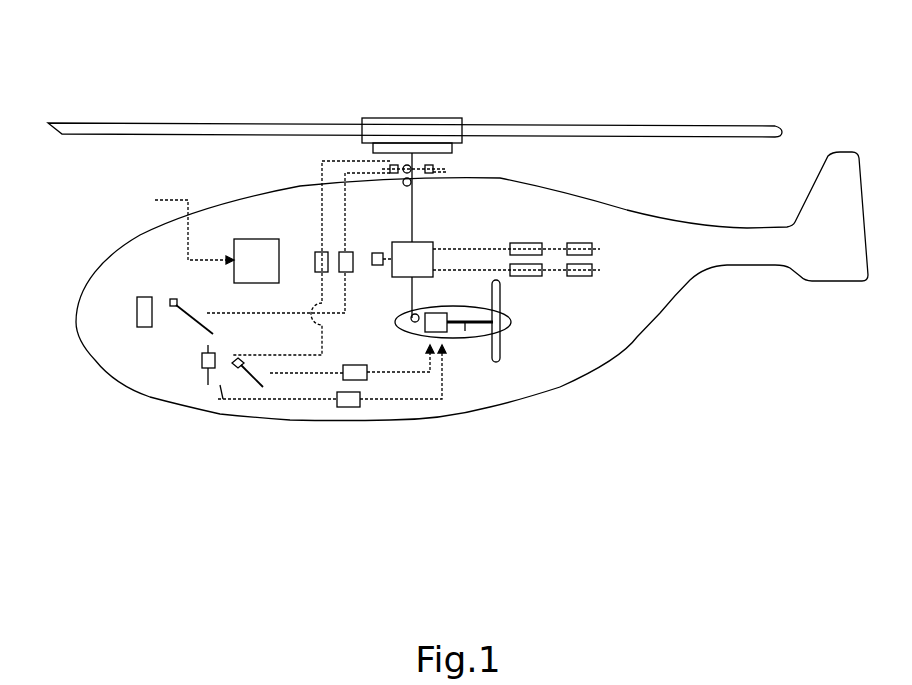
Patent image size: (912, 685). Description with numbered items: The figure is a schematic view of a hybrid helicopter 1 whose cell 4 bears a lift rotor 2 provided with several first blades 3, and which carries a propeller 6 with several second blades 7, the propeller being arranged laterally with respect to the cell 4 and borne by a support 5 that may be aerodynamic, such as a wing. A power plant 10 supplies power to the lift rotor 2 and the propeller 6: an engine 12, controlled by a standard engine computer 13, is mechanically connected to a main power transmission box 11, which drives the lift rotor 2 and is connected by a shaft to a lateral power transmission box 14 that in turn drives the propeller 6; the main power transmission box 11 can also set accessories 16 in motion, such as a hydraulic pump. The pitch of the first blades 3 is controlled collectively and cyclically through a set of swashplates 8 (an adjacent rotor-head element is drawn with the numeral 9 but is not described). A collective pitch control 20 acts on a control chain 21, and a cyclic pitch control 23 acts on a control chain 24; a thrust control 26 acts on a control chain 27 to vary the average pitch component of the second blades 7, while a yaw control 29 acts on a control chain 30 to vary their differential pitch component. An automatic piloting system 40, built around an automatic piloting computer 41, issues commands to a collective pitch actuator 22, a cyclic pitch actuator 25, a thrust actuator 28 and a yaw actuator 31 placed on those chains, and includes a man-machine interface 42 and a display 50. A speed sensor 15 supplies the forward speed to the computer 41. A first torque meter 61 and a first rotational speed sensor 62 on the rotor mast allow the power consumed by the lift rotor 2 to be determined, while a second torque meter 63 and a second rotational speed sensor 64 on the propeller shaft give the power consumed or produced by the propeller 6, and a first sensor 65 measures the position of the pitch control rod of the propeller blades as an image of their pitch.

The hybrid helicopter 1 is at (124, 491).
The lift rotor 2 is at (415, 85).
The first blades 3 is at (664, 125).
The cell 4 is at (550, 393).
The support 5 is at (385, 306).
The propeller 6 is at (535, 325).
The second blades 7 is at (500, 342).
The set of swashplates 8 is at (447, 160).
The rotor sensor 9 is at (433, 172).
The power plant 10 is at (546, 303).
The main power transmission box 11 is at (433, 243).
The engine 12 is at (545, 243).
The engine computer 13 is at (592, 249).
The lateral power transmission box 14 is at (463, 331).
The speed sensor 15 is at (137, 212).
The accessories 16 is at (377, 250).
The collective pitch control 20 is at (192, 325).
The control chain 21 is at (253, 313).
The collective pitch actuator 22 is at (337, 248).
The cyclic pitch control 23 is at (183, 385).
The control chain 24 is at (320, 345).
The cyclic pitch actuator 25 is at (317, 250).
The thrust control 26 is at (245, 374).
The control chain 27 is at (312, 375).
The thrust actuator 28 is at (367, 380).
The yaw control 29 is at (228, 420).
The control chain 30 is at (283, 420).
The yaw actuator 31 is at (347, 407).
The automatic piloting system 40 is at (228, 214).
The automatic piloting computer 41 is at (271, 272).
The man-machine interface 42 is at (203, 352).
The display 50 is at (133, 312).
The first torque meter 61 is at (396, 165).
The first rotational speed sensor 62 is at (407, 182).
The second torque meter 63 is at (457, 330).
The second rotational speed sensor 64 is at (473, 330).
The first sensor 65 is at (417, 313).